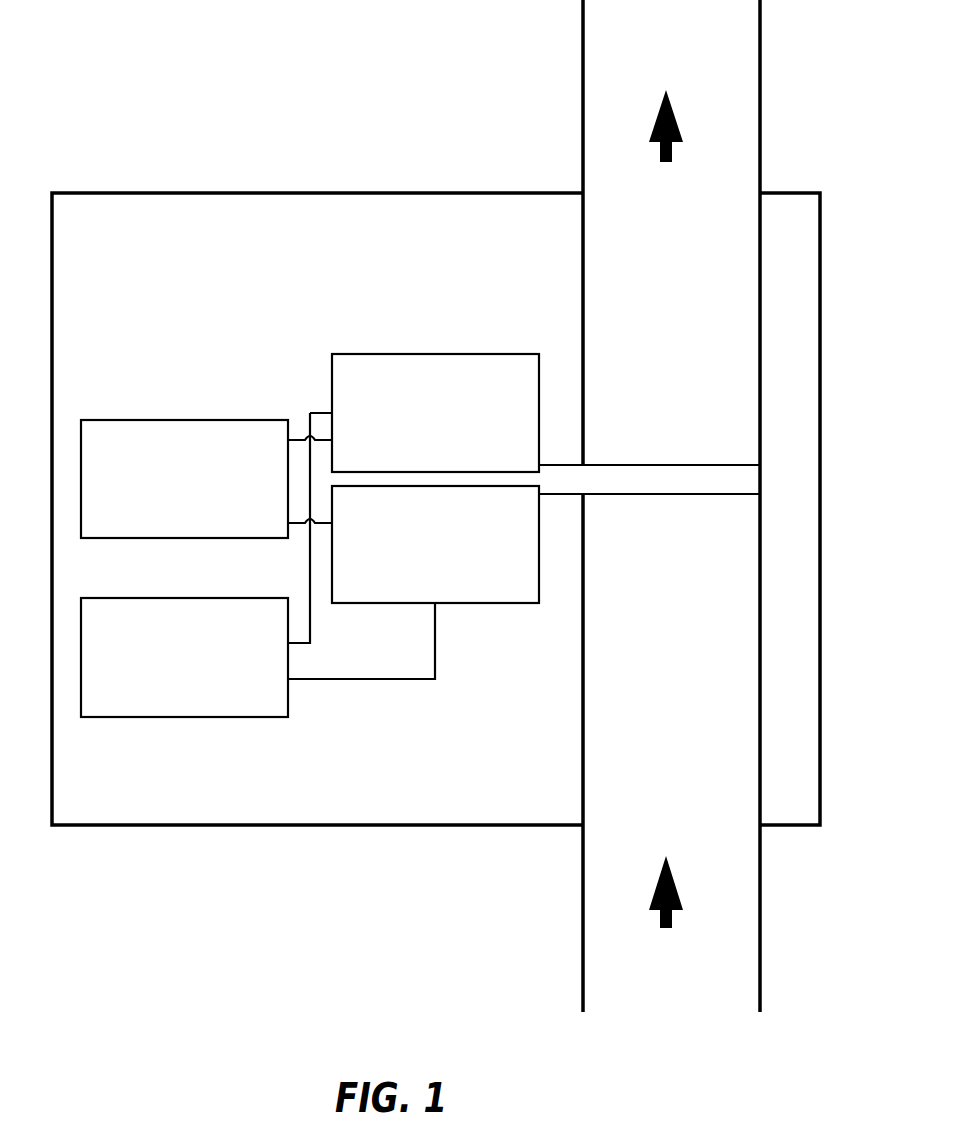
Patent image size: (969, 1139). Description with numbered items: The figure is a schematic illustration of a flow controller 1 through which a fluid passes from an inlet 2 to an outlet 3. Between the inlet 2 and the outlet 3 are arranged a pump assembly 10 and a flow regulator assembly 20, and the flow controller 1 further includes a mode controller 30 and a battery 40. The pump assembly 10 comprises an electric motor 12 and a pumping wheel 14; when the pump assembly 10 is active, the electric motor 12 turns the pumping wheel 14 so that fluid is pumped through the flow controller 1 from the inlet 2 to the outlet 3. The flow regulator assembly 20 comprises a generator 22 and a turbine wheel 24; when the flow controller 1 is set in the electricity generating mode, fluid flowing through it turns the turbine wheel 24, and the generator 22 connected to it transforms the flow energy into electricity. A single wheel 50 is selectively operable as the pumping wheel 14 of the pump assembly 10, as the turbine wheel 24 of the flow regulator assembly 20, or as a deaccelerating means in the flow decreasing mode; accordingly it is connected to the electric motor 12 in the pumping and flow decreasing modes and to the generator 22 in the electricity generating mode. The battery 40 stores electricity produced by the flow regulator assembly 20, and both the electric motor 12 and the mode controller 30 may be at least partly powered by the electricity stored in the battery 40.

The flow controller 1 is at (398, 113).
The inlet 2 is at (713, 915).
The outlet 3 is at (708, 100).
The pump assembly 10 is at (413, 500).
The electric motor 12 is at (502, 383).
The pumping wheel 14 is at (649, 482).
The flow regulator assembly 20 is at (470, 594).
The generator 22 is at (522, 582).
The turbine wheel 24 is at (622, 480).
The mode controller 30 is at (184, 434).
The battery 40 is at (128, 701).
The wheel 50 is at (678, 478).